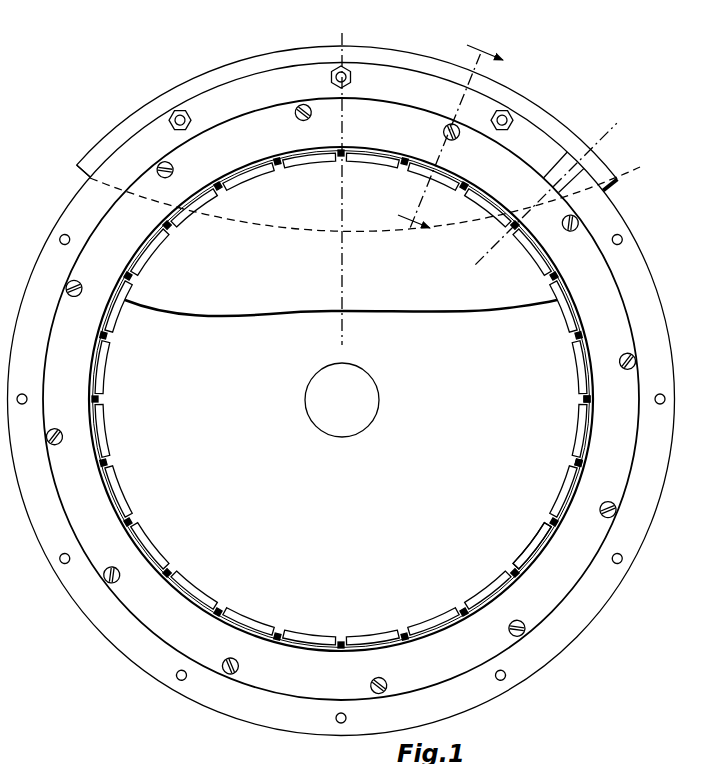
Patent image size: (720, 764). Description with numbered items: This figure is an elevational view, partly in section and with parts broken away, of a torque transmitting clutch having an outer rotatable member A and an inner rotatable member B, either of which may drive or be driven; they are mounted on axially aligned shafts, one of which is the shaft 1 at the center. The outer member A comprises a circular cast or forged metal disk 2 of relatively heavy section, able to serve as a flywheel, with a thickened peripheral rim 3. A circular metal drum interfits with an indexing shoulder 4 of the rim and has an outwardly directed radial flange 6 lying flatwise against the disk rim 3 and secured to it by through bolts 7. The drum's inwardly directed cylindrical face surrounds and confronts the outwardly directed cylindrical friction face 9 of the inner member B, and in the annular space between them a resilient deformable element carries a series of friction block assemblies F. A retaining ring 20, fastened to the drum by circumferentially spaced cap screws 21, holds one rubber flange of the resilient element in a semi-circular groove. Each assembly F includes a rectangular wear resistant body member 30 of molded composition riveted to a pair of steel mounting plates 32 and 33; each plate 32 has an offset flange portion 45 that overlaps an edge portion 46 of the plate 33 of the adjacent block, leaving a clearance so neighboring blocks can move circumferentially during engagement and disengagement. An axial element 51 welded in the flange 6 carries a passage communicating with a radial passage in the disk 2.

The shaft 1 is at (377, 422).
The disk 2 is at (357, 27).
The peripheral rim 3 is at (190, 80).
The indexing shoulder 4 is at (597, 111).
The radial flange 6 is at (148, 122).
The through bolts 7 is at (356, 75).
The friction face 9 is at (222, 188).
The retaining ring 20 is at (540, 558).
The cap screws 21 is at (518, 626).
The body member 30 is at (425, 627).
The mounting plate 32 is at (578, 486).
The mounting plate 33 is at (567, 516).
The offset flange portion 45 is at (577, 465).
The edge portion 46 is at (587, 399).
The axial element 51 is at (569, 168).
The outer rotatable member A is at (88, 152).
The inner rotatable member B is at (418, 320).
The friction block assemblies F is at (167, 551).